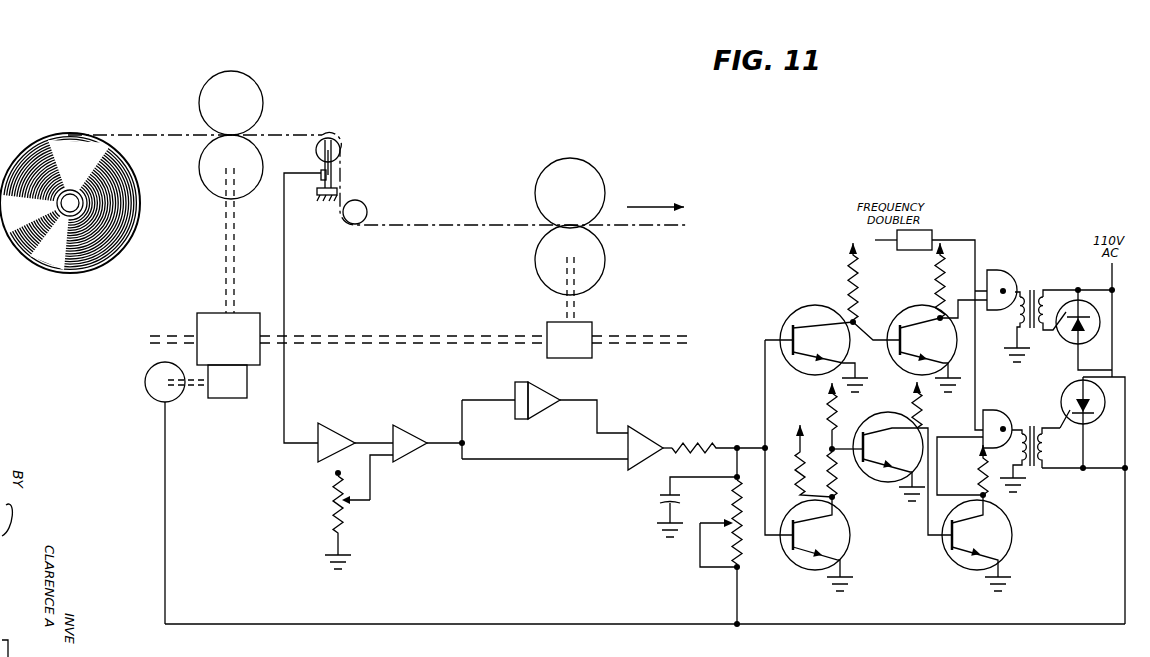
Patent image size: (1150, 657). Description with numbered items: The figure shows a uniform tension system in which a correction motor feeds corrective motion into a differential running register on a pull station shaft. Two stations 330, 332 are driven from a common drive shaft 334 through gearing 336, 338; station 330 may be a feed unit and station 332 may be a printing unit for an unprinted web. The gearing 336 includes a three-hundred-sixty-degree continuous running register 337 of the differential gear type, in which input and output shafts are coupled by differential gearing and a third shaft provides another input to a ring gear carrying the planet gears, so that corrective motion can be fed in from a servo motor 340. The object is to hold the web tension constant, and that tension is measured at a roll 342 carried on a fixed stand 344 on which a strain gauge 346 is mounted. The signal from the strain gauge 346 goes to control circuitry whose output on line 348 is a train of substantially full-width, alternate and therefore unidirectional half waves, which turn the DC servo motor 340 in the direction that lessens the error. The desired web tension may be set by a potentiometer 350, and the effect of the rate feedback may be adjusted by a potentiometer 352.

The station 330 is at (238, 63).
The station 332 is at (583, 150).
The common drive shaft 334 is at (442, 322).
The gearing 336 is at (240, 313).
The continuous running register of the differential gear type 337 is at (230, 399).
The gearing 338 is at (578, 323).
The servo motor 340 is at (157, 401).
The roll 342 is at (341, 146).
The fixed stand 344 is at (321, 173).
The strain gauge 346 is at (318, 190).
The line 348 is at (541, 624).
The potentiometer 350 is at (335, 506).
The potentiometer 352 is at (741, 540).